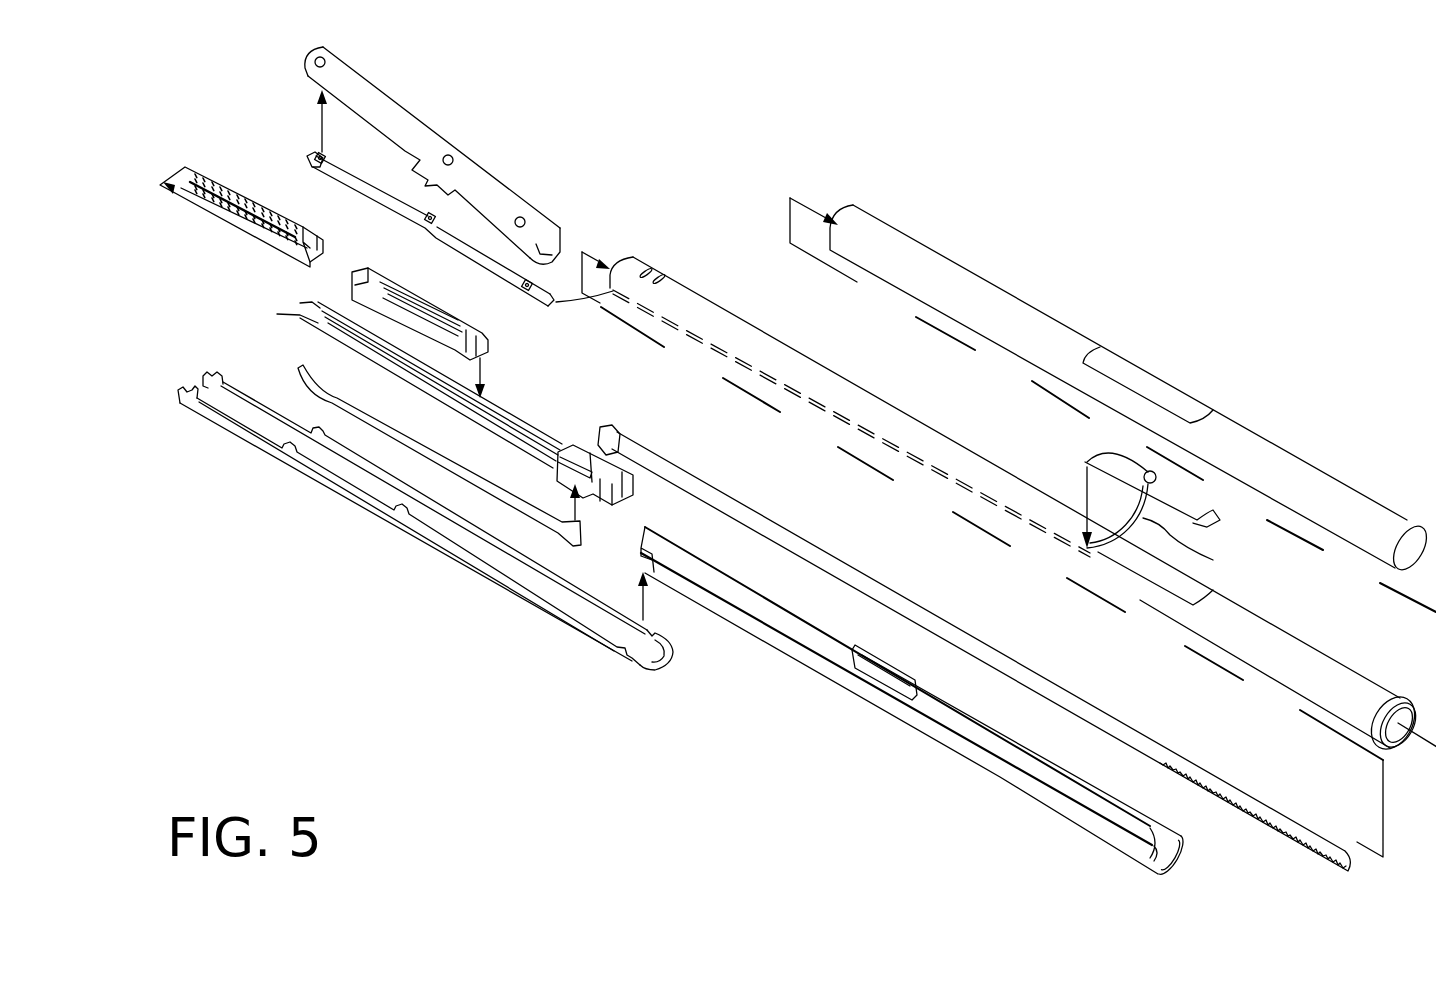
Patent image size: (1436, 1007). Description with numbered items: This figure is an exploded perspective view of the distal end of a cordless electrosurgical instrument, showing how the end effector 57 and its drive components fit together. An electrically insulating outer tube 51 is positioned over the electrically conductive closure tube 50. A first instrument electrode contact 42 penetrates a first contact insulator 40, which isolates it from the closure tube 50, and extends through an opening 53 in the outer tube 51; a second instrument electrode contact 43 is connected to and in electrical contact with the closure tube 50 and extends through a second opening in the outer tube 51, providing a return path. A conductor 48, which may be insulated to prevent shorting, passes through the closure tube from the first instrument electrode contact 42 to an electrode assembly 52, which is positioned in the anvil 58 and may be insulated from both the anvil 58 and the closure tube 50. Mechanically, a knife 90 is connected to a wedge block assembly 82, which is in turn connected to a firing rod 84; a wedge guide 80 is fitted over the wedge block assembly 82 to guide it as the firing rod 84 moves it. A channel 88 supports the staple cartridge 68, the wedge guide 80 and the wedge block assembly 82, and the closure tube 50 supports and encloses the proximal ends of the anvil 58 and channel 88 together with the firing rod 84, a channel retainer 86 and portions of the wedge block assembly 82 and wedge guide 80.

The first contact insulator 40 is at (1206, 512).
The first instrument electrode contact 42 is at (1136, 462).
The second instrument electrode contact 43 is at (1143, 603).
The conductor 48 is at (685, 309).
The closure tube 50 is at (843, 388).
The outer tube 51 is at (953, 270).
The electrode assembly 52 is at (401, 216).
The opening 53 is at (1158, 385).
The end effector 57 is at (488, 132).
The anvil 58 is at (403, 113).
The staple cartridge 68 is at (219, 175).
The wedge guide 80 is at (455, 329).
The wedge block assembly 82 is at (506, 418).
The firing rod 84 is at (1174, 754).
The channel retainer 86 is at (877, 703).
The channel 88 is at (584, 628).
The knife 90 is at (411, 439).